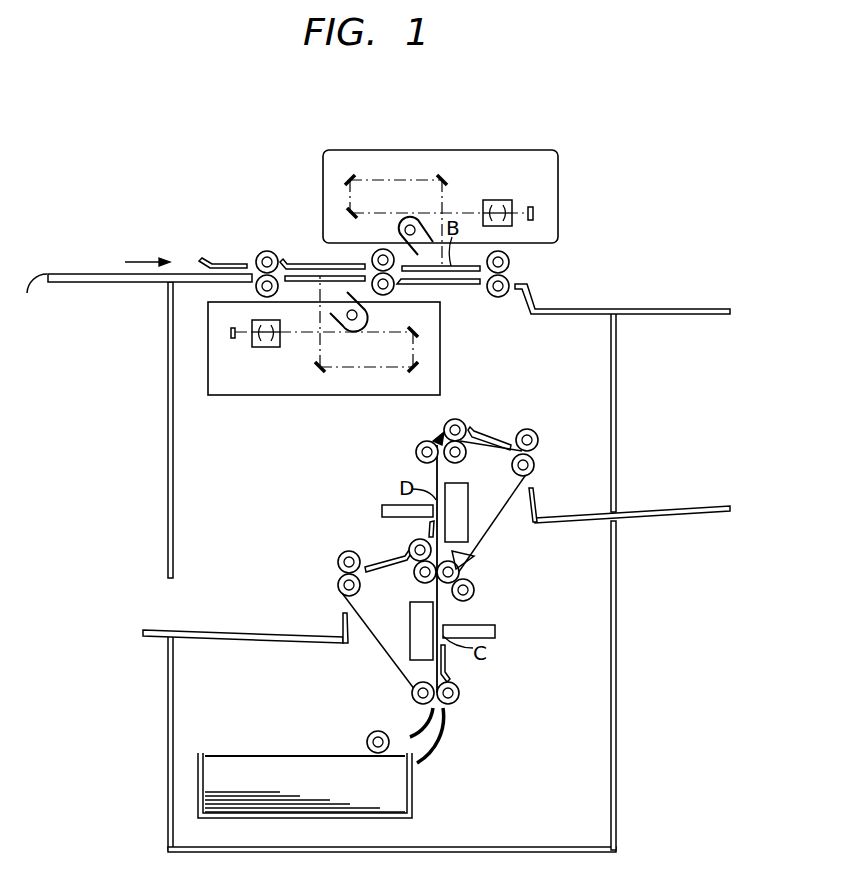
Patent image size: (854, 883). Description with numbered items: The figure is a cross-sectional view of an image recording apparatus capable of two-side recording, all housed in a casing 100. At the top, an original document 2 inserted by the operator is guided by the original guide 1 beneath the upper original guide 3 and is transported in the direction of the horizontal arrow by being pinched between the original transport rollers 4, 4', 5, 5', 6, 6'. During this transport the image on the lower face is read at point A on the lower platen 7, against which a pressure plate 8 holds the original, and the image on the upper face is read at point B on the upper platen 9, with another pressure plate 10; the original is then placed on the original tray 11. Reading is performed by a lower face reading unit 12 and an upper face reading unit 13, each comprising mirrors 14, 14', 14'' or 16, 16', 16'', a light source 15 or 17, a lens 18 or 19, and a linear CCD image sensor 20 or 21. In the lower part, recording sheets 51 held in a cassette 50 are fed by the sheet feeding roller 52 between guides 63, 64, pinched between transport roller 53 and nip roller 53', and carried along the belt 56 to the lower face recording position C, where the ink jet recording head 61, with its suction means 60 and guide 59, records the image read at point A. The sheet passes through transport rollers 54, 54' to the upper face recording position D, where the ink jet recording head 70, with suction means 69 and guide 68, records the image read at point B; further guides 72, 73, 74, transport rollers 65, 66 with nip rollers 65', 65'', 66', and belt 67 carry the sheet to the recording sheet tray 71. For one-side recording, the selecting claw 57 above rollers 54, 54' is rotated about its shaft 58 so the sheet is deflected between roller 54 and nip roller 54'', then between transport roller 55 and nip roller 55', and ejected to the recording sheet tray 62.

The original guide 1 is at (65, 283).
The original document 2 is at (30, 275).
The upper original guide 3 is at (220, 263).
The original transport roller 4 is at (230, 292).
The original transport roller 4' is at (266, 243).
The original transport roller 5 is at (414, 294).
The original transport roller 5' is at (349, 257).
The original transport roller 6 is at (498, 305).
The original transport roller 6' is at (517, 264).
The lower platen 7 is at (302, 281).
The pressure plate 8 is at (298, 264).
The upper platen 9 is at (470, 265).
The pressure plate 10 is at (470, 285).
The original tray 11 is at (684, 316).
The lower face reading unit 12 is at (347, 354).
The upper face reading unit 13 is at (419, 183).
The mirror 14 is at (305, 376).
The mirror 14' is at (397, 379).
The mirror 14'' is at (447, 339).
The light source 15 is at (358, 316).
The mirror 16 is at (443, 149).
The mirror 16' is at (352, 149).
The mirror 16'' is at (318, 204).
The light source 17 is at (402, 232).
The lens 18 is at (268, 348).
The lens 19 is at (497, 200).
The linear CCD image sensor 20 is at (233, 339).
The linear CCD image sensor 21 is at (531, 207).
The cassette 50 is at (413, 787).
The recording sheet 51 is at (285, 756).
The sheet feeding roller 52 is at (367, 742).
The transport roller 53 is at (399, 694).
The nip roller 53' is at (476, 694).
The transport roller 54 is at (406, 579).
The transport roller 54' is at (470, 594).
The nip roller 54'' is at (402, 546).
The transport roller 55 is at (325, 581).
The nip roller 55' is at (325, 556).
The belt 56 is at (378, 644).
The selecting claw 57 is at (478, 563).
The shaft 58 is at (475, 591).
The guide 59 is at (448, 660).
The suction means 60 is at (410, 618).
The ink jet recording head 61 is at (496, 631).
The recording sheet tray 62 is at (237, 631).
The guide 63 is at (440, 740).
The guide 64 is at (422, 727).
The transport roller 65 is at (470, 458).
The nip roller 65' is at (407, 447).
The nip roller 65'' is at (466, 409).
The transport roller 66 is at (544, 466).
The nip roller 66' is at (541, 421).
The belt 67 is at (496, 522).
The guide 68 is at (428, 528).
The suction means 69 is at (469, 498).
The ink jet recording head 70 is at (382, 508).
The recording sheet tray 71 is at (697, 508).
The guide 72 is at (490, 434).
The guide 73 is at (436, 437).
The guide 74 is at (368, 563).
The casing 100 is at (616, 722).